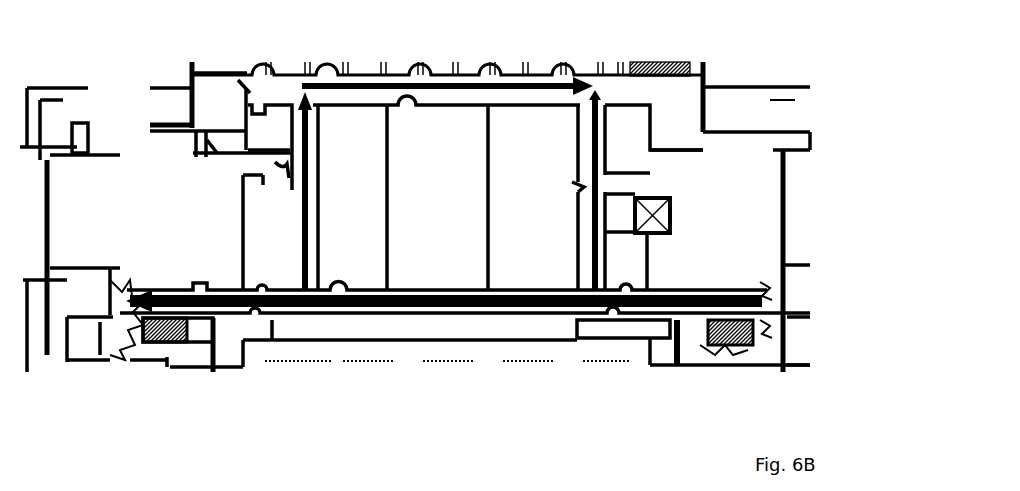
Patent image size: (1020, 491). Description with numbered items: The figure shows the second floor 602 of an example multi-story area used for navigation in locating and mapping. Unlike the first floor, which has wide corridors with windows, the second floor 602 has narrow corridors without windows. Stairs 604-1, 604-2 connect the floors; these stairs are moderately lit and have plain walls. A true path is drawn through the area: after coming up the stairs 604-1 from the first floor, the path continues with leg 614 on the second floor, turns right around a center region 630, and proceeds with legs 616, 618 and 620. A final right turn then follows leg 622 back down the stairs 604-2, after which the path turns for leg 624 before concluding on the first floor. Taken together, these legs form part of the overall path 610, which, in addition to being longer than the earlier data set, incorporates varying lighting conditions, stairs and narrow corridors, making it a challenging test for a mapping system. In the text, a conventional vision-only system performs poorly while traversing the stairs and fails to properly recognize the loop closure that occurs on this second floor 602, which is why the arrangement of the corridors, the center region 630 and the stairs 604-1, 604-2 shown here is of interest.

The second floor 602 is at (559, 54).
The leg 618 is at (452, 86).
The leg 616 is at (314, 170).
The center region 630 is at (447, 219).
The leg 620 is at (536, 197).
The leg 622 is at (205, 284).
The leg 614 is at (676, 286).
The path 610 is at (516, 327).
The leg 624 is at (137, 324).
The stairs 604-1 is at (729, 340).
The stairs 604-2 is at (178, 340).